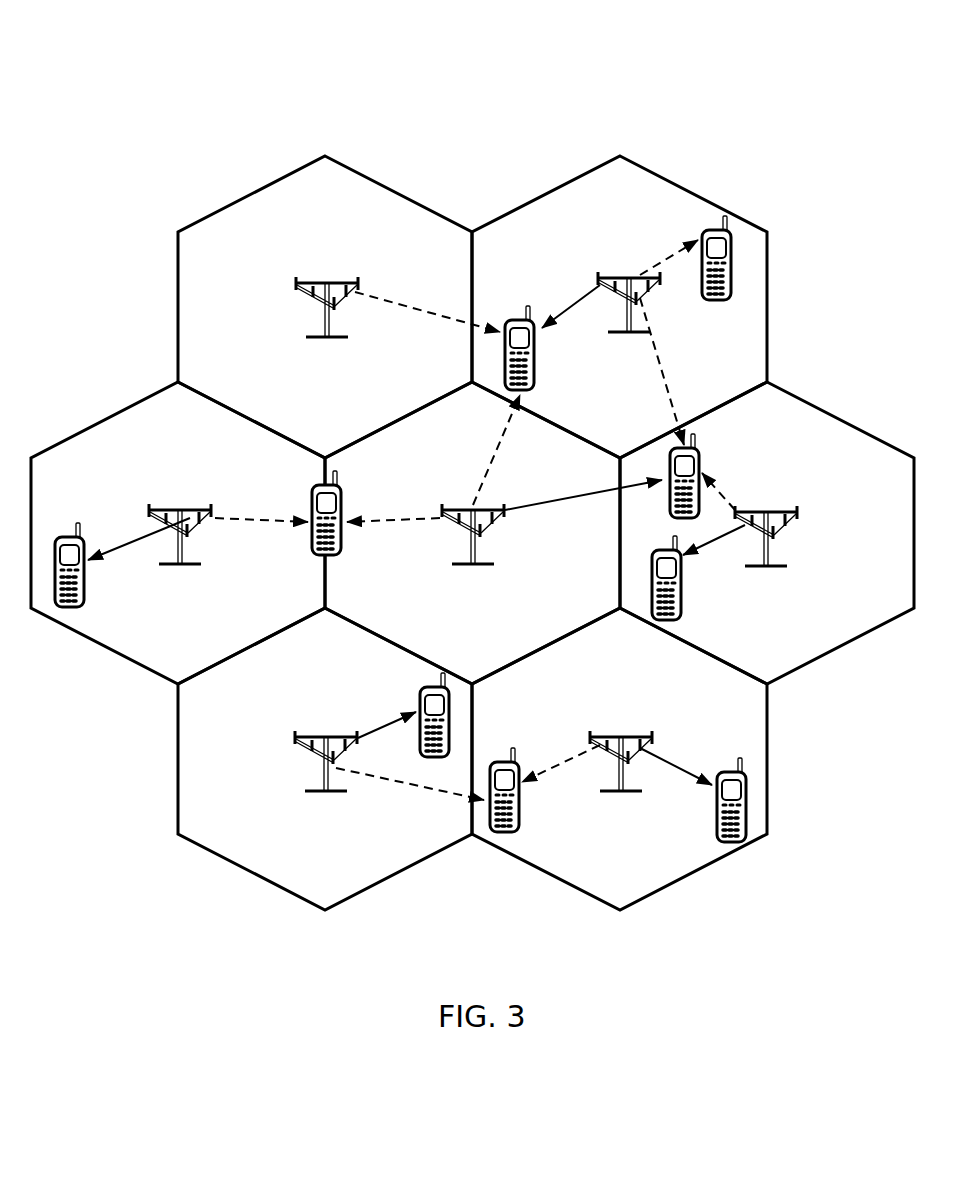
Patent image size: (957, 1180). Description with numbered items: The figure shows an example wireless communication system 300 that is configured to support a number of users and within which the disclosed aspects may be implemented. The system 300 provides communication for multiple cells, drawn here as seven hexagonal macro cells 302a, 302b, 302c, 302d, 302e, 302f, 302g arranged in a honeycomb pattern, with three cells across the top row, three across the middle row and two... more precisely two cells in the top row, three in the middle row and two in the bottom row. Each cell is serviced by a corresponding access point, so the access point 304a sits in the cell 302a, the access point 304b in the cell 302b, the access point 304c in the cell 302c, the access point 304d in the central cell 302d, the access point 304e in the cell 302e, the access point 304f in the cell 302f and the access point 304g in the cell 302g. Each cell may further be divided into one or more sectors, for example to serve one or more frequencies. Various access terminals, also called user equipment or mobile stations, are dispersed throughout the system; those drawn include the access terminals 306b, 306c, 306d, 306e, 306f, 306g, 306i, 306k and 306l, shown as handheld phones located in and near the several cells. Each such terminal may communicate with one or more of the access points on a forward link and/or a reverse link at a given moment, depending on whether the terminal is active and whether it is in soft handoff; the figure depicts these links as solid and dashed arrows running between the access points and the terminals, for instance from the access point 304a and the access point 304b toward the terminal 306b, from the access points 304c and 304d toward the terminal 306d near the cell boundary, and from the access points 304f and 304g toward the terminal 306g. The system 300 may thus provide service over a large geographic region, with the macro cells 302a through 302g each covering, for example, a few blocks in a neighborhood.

The wireless communication system 300 is at (780, 78).
The macro cell 302a is at (235, 203).
The macro cell 302b is at (714, 201).
The macro cell 302c is at (110, 415).
The macro cell 302d is at (469, 436).
The macro cell 302e is at (838, 416).
The macro cell 302f is at (216, 853).
The macro cell 302g is at (730, 853).
The access point 304a is at (327, 280).
The access point 304b is at (600, 276).
The access point 304c is at (180, 506).
The access point 304d is at (440, 506).
The access point 304e is at (795, 510).
The access point 304f is at (326, 735).
The access point 304g is at (621, 735).
The access terminal 306b is at (528, 308).
The access terminal 306c is at (84, 600).
The access terminal 306d is at (312, 556).
The access terminal 306e is at (699, 449).
The access terminal 306f is at (420, 690).
The access terminal 306g is at (518, 820).
The access terminal 306i is at (700, 236).
The access terminal 306k is at (681, 600).
The mobile station 306l is at (729, 768).